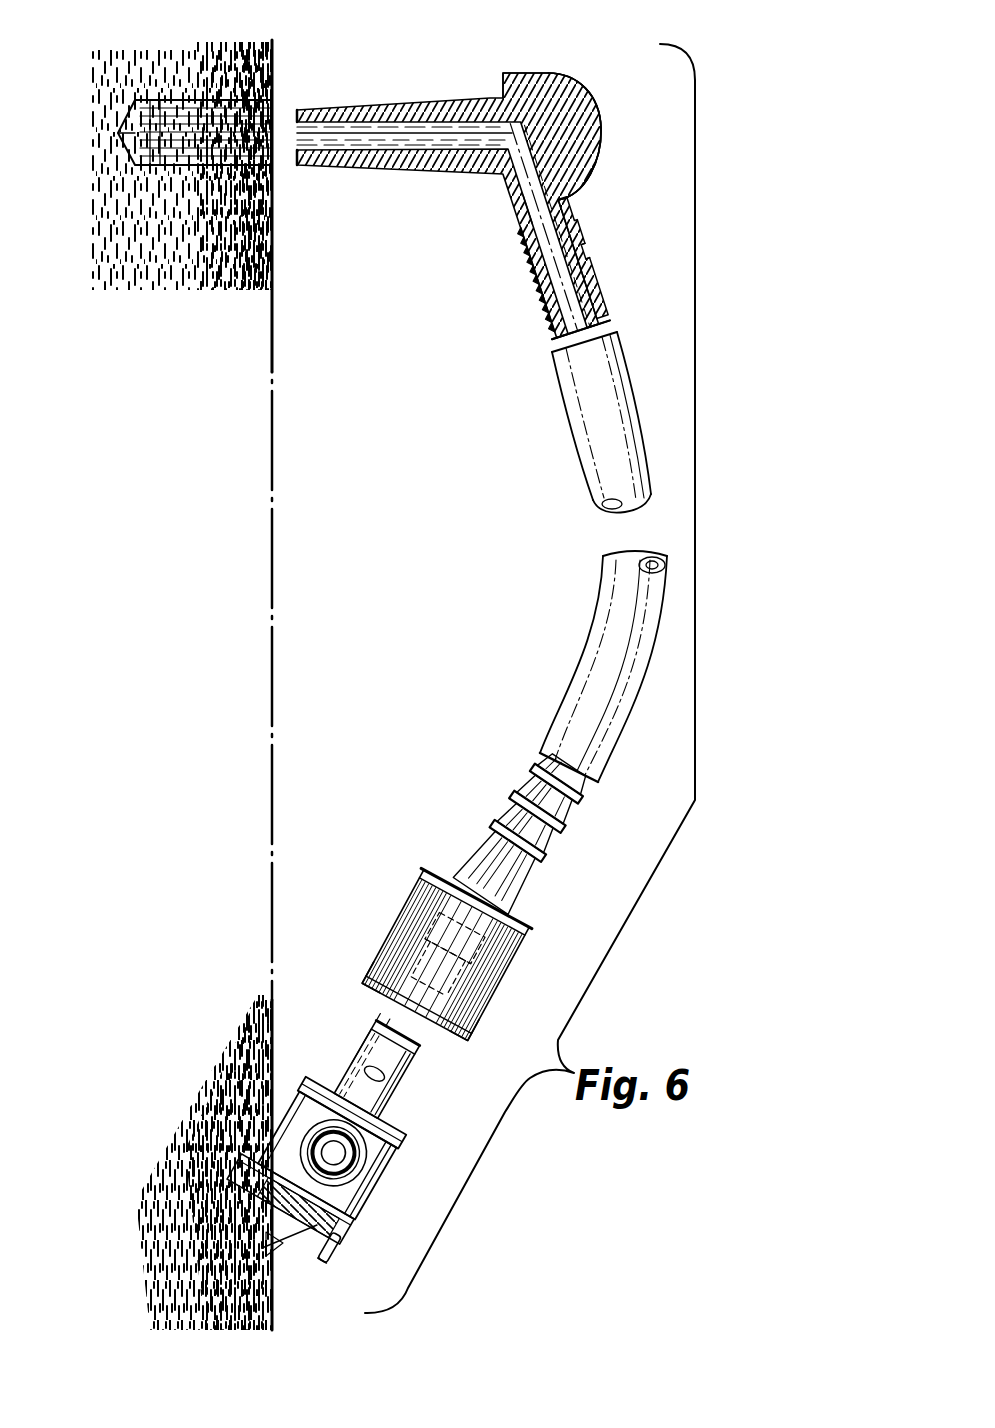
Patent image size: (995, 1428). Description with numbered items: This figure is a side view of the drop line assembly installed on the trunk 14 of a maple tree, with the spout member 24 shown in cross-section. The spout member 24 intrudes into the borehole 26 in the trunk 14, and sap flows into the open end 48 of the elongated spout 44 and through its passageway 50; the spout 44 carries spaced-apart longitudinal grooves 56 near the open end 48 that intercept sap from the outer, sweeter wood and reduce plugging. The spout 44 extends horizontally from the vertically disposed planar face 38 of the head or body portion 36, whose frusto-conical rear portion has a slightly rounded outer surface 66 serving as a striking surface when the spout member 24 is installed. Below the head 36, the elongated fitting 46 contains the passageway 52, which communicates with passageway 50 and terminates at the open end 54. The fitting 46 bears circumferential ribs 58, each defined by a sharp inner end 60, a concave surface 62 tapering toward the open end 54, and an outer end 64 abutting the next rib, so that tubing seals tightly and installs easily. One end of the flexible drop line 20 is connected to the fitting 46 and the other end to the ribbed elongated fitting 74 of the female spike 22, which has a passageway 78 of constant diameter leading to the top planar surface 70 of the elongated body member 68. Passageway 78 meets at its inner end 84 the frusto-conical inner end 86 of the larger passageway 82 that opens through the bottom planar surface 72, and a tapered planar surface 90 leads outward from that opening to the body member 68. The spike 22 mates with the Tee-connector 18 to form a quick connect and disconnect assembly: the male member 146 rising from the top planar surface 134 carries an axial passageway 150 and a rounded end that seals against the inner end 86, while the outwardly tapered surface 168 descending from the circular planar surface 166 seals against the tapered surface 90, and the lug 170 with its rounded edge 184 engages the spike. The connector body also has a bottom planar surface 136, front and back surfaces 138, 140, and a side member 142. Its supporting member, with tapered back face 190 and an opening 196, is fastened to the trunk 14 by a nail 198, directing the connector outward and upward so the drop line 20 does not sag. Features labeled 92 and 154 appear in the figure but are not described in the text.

The tree trunk 14 is at (275, 478).
The Tee-connector 18 is at (296, 1119).
The drop line 20 is at (580, 470).
The female spike member 22 is at (477, 908).
The spout member 24 is at (479, 173).
The borehole 26 is at (240, 97).
The head or body portion 36 is at (578, 82).
The vertically disposed planar face 38 is at (497, 80).
The elongated spout 44 is at (410, 96).
The elongated fitting 46 is at (528, 290).
The open end 48 is at (298, 166).
The passageway 50 is at (360, 174).
The passageway 52 is at (538, 202).
The open end 54 is at (586, 333).
The longitudinal grooves 56 is at (301, 108).
The circumferential ribs 58 is at (536, 770).
The inner end 60 is at (581, 257).
The concave surface 62 is at (557, 329).
The outer end 64 is at (591, 287).
The outer surface 66 is at (599, 136).
The elongated body member 68 is at (500, 1000).
The top planar surface 70 is at (521, 918).
The bottom planar surface 72 is at (370, 988).
The elongated fitting 74 is at (567, 826).
The passageway 78 is at (497, 832).
The passageway 82 is at (418, 893).
The inner end 84 is at (480, 937).
The inner end 86 is at (430, 870).
The planar surface 90 is at (468, 1042).
The internal bore 92 is at (372, 962).
The top planar surface 134 is at (342, 1050).
The bottom planar surface 136 is at (353, 1242).
The front surface 138 is at (390, 1152).
The back surface 140 is at (300, 1093).
The first side member 142 is at (386, 1172).
The male member 146 is at (421, 1076).
The passageway 150 is at (419, 1050).
The mounting plate 154 is at (357, 1218).
The planar surface 166 is at (398, 1112).
The outwardly tapered surface 168 is at (401, 1122).
The lug 170 is at (383, 1033).
The edge 184 is at (396, 1096).
The back face 190 is at (262, 1248).
The opening 196 is at (321, 1254).
The nail 198 is at (333, 1260).